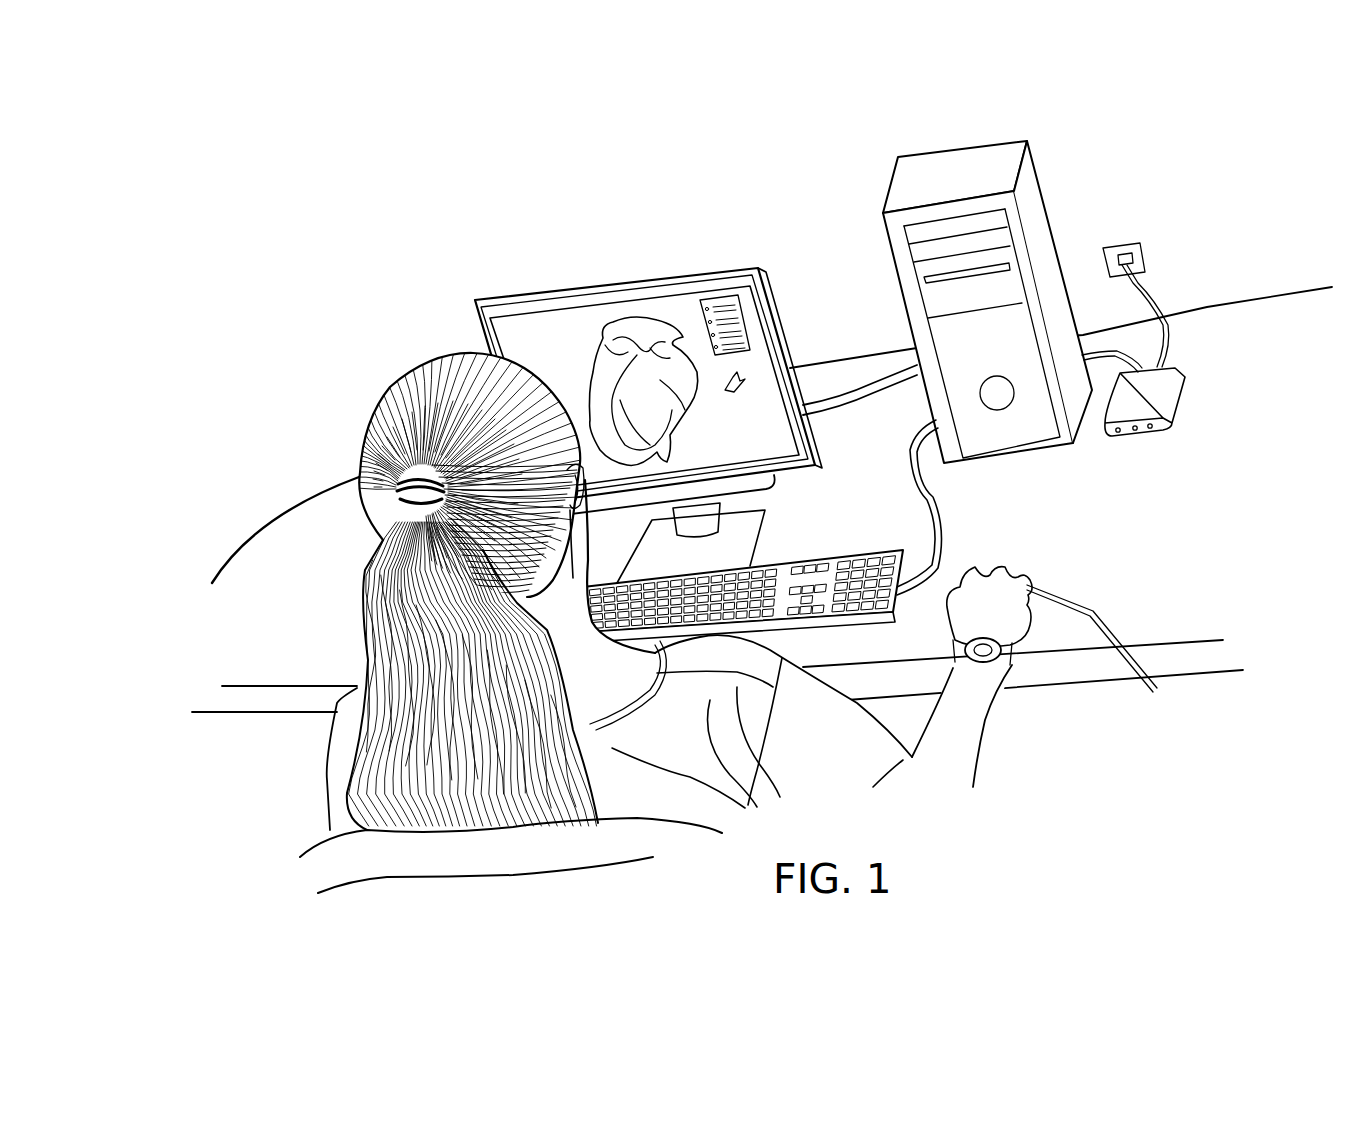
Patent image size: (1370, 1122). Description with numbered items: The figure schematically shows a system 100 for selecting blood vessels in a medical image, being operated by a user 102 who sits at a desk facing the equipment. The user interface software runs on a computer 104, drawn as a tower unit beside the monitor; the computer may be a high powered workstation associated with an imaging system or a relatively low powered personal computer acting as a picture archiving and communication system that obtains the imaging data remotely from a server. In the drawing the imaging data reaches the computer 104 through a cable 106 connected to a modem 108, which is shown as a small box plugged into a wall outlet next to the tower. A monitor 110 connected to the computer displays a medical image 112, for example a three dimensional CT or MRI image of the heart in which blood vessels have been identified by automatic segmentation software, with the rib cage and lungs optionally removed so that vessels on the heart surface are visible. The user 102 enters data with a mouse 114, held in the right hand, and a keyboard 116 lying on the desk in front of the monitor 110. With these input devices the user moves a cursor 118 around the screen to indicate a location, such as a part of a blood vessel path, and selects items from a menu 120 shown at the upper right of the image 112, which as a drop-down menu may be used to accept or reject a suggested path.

The system 100 is at (829, 203).
The user 102 is at (387, 383).
The computer 104 is at (1000, 150).
The cable 106 is at (1133, 347).
The modem 108 is at (1175, 395).
The monitor 110 is at (585, 288).
The medical image 112 is at (613, 338).
The mouse 114 is at (987, 567).
The keyboard 116 is at (840, 557).
The cursor 118 is at (740, 373).
The menu 120 is at (737, 308).